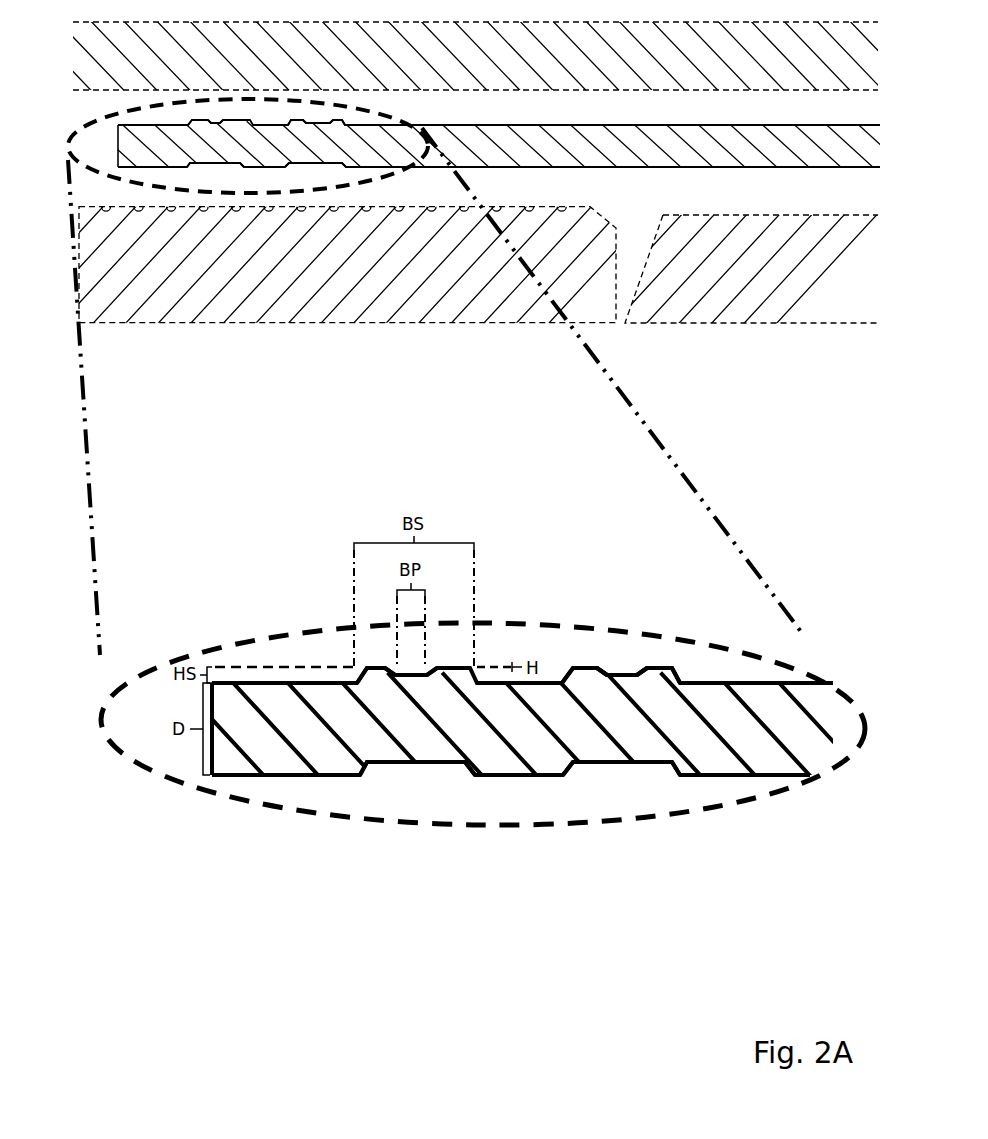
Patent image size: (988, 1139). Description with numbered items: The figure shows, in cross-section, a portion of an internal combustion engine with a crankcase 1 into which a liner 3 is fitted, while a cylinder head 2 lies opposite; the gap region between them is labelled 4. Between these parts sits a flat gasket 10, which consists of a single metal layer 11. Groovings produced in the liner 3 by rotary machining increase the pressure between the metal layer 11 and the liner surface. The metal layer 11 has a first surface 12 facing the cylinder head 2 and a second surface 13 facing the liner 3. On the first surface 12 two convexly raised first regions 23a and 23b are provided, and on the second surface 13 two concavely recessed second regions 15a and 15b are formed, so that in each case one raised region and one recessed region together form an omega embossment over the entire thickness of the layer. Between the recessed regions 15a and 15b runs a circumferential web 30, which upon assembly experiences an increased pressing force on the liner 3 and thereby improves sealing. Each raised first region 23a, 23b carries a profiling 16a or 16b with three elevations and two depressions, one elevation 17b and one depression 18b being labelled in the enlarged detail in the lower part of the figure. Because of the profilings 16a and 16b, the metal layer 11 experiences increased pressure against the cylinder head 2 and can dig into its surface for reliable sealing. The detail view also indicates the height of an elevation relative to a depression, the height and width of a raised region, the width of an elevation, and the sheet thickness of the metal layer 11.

The crankcase 1 is at (717, 298).
The cylinder head 2 is at (94, 57).
The liner 3 is at (288, 310).
The gap 4 is at (42, 270).
The flat gasket 10 is at (855, 132).
The metal layer 11 is at (793, 170).
The first surface 12 is at (752, 123).
The second surface 13 is at (685, 168).
The concavely recessed region 15a is at (210, 164).
The concavely recessed region 15b is at (313, 163).
The profiling 16a is at (208, 122).
The profiling 16b is at (335, 128).
The elevation 17b is at (617, 667).
The depression 18b is at (598, 667).
The convexly raised first region 23a is at (220, 127).
The convexly raised first region 23b is at (330, 126).
The web 30 is at (510, 770).